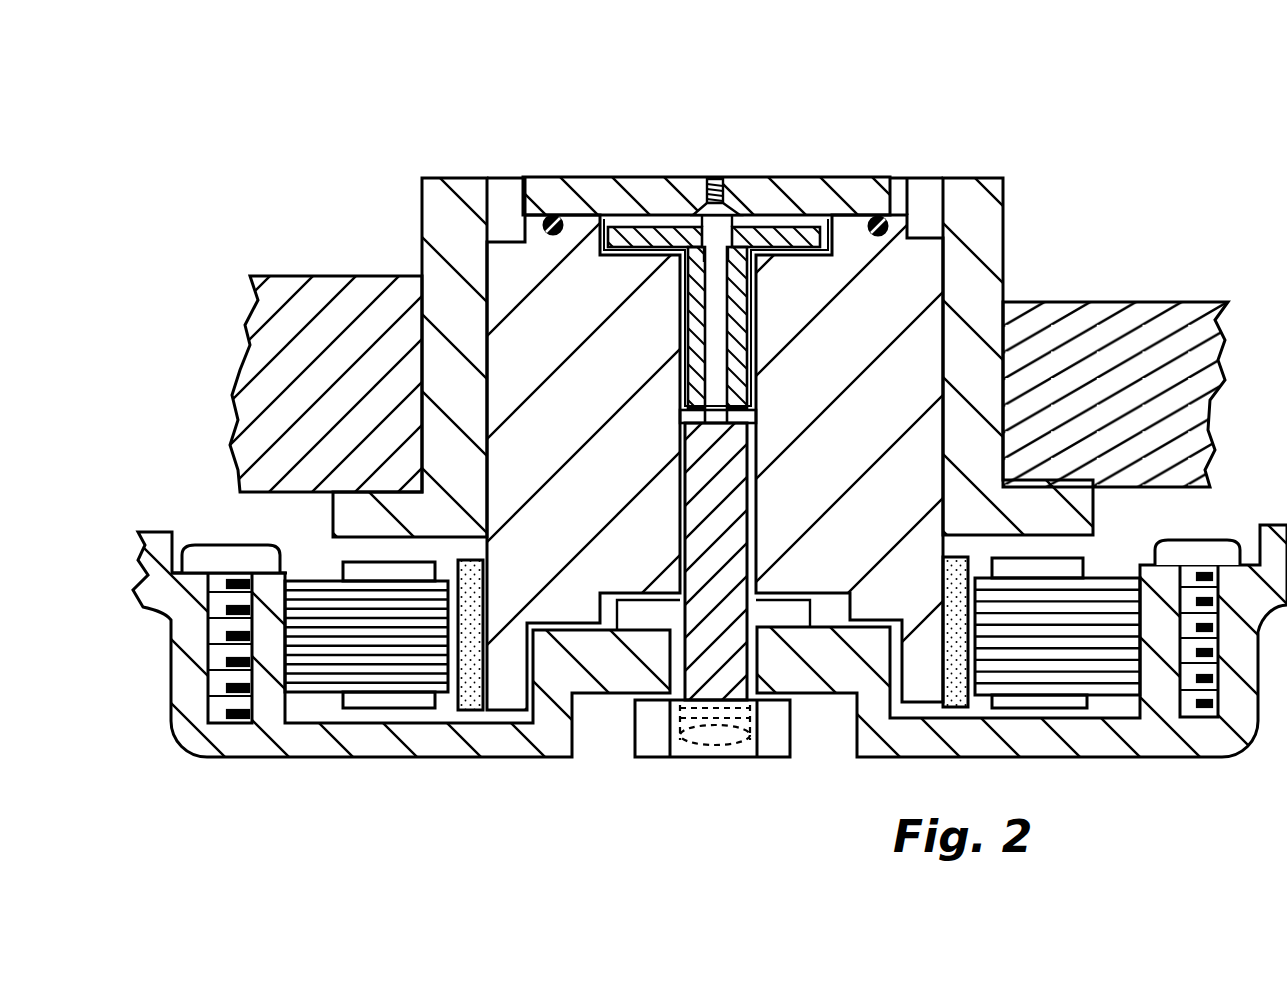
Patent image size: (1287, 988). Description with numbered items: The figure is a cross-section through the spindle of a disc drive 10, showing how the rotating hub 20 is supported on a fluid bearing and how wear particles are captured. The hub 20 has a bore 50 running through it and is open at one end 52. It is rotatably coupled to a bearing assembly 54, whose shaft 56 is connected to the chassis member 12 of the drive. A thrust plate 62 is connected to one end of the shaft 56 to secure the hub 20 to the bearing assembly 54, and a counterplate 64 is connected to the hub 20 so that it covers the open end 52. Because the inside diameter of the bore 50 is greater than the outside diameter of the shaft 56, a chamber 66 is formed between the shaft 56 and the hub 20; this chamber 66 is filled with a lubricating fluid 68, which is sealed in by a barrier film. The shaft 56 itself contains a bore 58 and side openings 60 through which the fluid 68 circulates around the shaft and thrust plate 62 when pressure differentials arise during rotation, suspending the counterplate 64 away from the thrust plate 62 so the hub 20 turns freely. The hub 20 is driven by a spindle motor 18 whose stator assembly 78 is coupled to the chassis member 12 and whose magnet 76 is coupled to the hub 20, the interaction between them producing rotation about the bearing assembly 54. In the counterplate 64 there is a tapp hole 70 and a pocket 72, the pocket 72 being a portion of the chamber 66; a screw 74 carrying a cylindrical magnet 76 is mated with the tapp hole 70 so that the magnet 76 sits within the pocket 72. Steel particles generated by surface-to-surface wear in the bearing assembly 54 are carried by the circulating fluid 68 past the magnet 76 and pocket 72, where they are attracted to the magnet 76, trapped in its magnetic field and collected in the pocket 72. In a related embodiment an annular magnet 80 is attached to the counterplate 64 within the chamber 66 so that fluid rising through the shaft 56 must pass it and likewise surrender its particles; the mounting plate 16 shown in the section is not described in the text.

The disc drive 10 is at (334, 138).
The chassis member 12 is at (552, 764).
The mounting plate 16 is at (293, 276).
The spindle motor 18 is at (358, 712).
The hub 20 is at (952, 248).
The bore 50 is at (760, 268).
The open end 52 is at (612, 215).
The bearing assembly 54 is at (750, 437).
The shaft 56 is at (730, 528).
The bore 58 is at (737, 212).
The side openings 60 is at (755, 421).
The thrust plate 62 is at (647, 215).
The counterplate 64 is at (552, 178).
The chamber 66 is at (815, 215).
The lubricating fluid 68 is at (749, 324).
The tapp hole 70 is at (710, 178).
The pocket 72 is at (748, 208).
The screw 74 is at (720, 178).
The magnet 76 is at (702, 208).
The stator assembly 78 is at (437, 699).
The annular magnet 80 is at (474, 712).